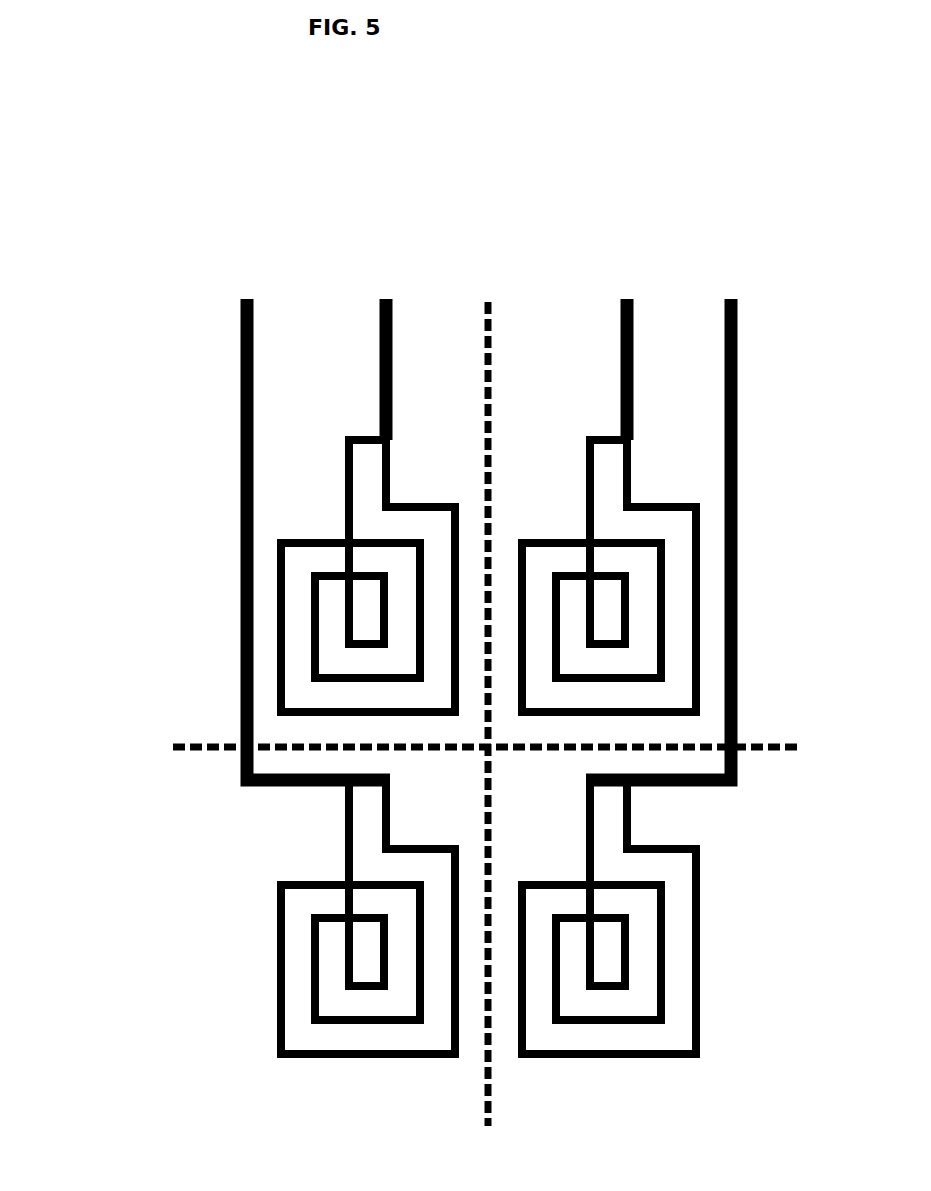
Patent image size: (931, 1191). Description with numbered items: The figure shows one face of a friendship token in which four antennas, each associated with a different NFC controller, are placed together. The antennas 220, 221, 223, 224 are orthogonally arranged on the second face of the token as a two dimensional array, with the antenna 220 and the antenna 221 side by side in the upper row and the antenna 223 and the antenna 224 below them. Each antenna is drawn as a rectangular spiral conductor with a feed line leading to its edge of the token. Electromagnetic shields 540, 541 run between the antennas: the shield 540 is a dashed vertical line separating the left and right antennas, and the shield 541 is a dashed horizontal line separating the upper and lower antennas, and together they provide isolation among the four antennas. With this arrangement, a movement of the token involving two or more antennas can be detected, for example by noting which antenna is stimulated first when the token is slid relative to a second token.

The antenna 220 is at (318, 512).
The antenna 221 is at (553, 512).
The antenna 223 is at (312, 854).
The antenna 224 is at (553, 854).
The electromagnetic shield 540 is at (483, 297).
The electromagnetic shield 541 is at (168, 748).